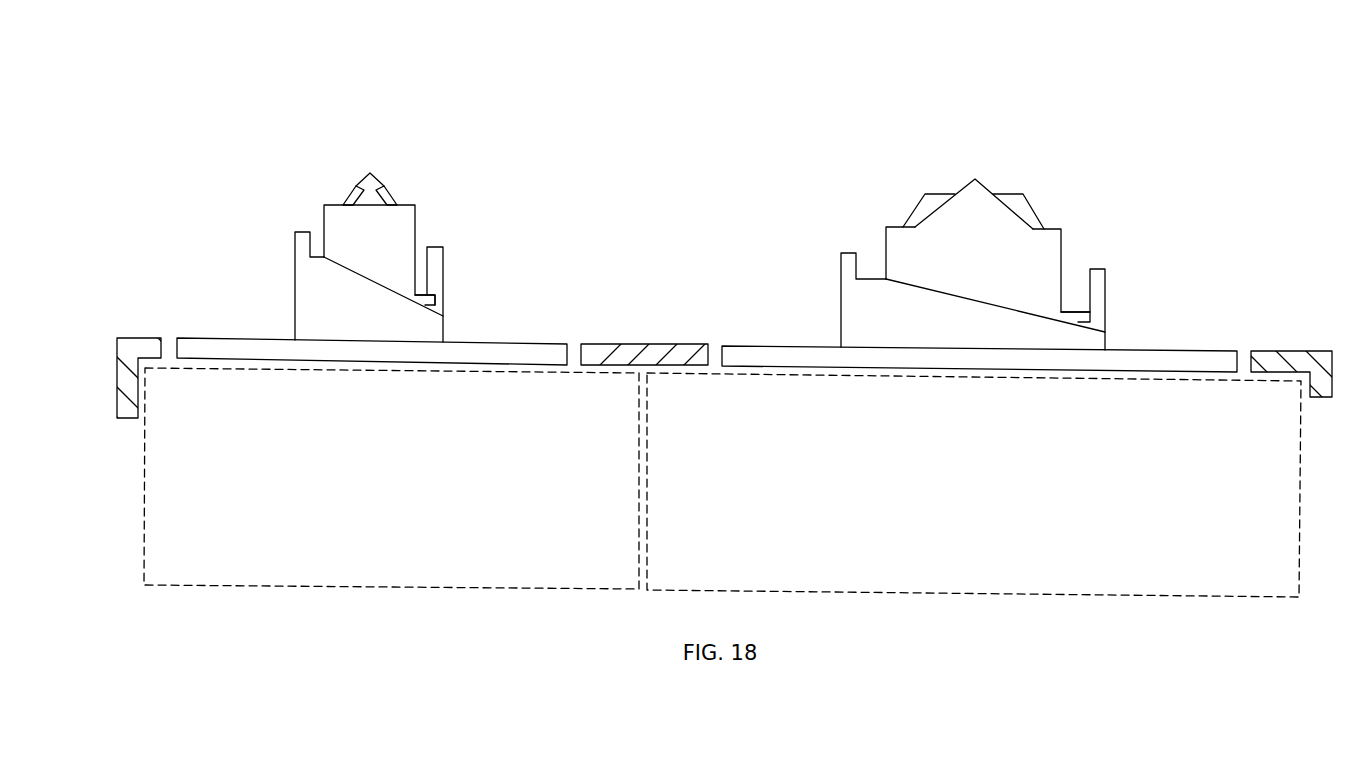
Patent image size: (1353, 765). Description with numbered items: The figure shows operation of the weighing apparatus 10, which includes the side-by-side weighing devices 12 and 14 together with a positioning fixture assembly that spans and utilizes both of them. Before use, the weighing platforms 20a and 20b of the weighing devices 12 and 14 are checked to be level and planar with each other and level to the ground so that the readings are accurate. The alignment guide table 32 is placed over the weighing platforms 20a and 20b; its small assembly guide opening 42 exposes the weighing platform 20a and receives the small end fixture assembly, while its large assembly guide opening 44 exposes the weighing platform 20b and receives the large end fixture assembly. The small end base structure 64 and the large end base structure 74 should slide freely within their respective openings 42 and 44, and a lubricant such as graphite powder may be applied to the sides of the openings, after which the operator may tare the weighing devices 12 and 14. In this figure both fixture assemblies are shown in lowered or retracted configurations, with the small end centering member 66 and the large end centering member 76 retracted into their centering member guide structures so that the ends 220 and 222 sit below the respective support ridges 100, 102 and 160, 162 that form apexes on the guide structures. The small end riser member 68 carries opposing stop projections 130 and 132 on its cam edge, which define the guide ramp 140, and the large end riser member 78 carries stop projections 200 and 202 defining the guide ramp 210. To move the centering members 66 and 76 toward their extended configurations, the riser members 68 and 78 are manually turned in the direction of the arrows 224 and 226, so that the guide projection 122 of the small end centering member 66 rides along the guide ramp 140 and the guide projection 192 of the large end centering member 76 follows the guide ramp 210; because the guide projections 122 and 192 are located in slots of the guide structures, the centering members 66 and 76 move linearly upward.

The weighing apparatus 10 is at (804, 160).
The weighing device 12 is at (430, 609).
The weighing device 14 is at (1007, 614).
The weighing platform 20a is at (363, 364).
The weighing platform 20b is at (945, 375).
The alignment guide table 32 is at (642, 344).
The small assembly guide opening 42 is at (160, 338).
The large assembly guide opening 44 is at (722, 348).
The small end base structure 64 is at (487, 373).
The small end centering member 66 is at (412, 193).
The small end riser member 68 is at (280, 231).
The large end base structure 74 is at (1093, 380).
The large end centering member 76 is at (1060, 212).
The large end riser member 78 is at (811, 245).
The support ridge 100 is at (403, 148).
The support ridge 102 is at (370, 173).
The guide projection 122 is at (433, 305).
The stop projection 130 is at (304, 232).
The stop projection 132 is at (444, 262).
The guide ramp 140 is at (386, 287).
The support ridge 160 is at (991, 169).
The support ridge 162 is at (975, 179).
The guide projection 192 is at (1087, 320).
The stop projection 200 is at (852, 253).
The stop projection 202 is at (1107, 276).
The guide ramp 210 is at (963, 294).
The end 220 is at (350, 194).
The end 222 is at (940, 194).
The arrow 224 is at (316, 322).
The arrow 226 is at (862, 328).